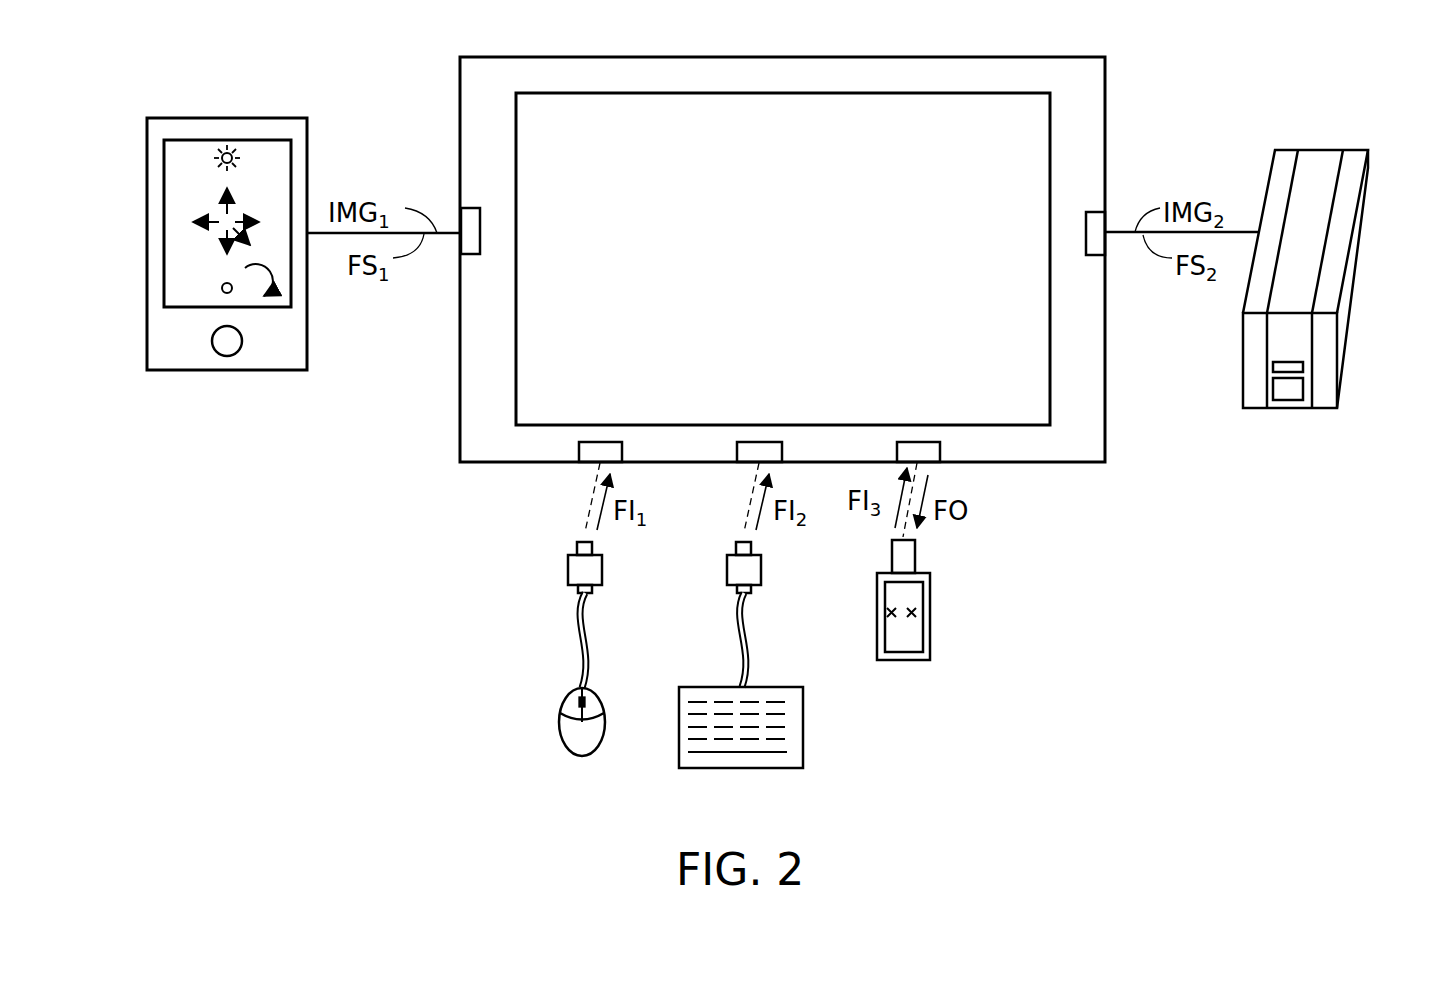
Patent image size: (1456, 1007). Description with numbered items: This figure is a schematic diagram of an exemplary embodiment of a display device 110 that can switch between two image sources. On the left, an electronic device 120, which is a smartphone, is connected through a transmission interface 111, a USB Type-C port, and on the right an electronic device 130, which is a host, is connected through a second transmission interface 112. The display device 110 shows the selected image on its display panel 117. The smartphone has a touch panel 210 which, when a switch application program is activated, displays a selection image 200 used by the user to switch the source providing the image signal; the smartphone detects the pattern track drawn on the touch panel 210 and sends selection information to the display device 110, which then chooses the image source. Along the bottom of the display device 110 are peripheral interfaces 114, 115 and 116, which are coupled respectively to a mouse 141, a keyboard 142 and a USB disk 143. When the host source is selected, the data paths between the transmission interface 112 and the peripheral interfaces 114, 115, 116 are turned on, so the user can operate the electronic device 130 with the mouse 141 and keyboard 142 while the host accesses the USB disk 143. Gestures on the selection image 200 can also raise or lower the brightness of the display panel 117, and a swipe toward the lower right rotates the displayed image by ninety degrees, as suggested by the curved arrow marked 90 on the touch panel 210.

The display device 110 is at (560, 56).
The transmission interface 111 is at (464, 207).
The transmission interface 112 is at (1100, 211).
The peripheral interface 114 is at (580, 452).
The peripheral interface 115 is at (738, 452).
The peripheral interface 116 is at (940, 454).
The display panel 117 is at (808, 274).
The electronic device 120 is at (230, 116).
The electronic device 130 is at (1352, 148).
The mouse 141 is at (585, 757).
The keyboard 142 is at (740, 768).
The USB disk 143 is at (903, 660).
The selection image 200 is at (175, 265).
The touch panel 210 is at (164, 183).
The rotation angle 90 is at (261, 280).